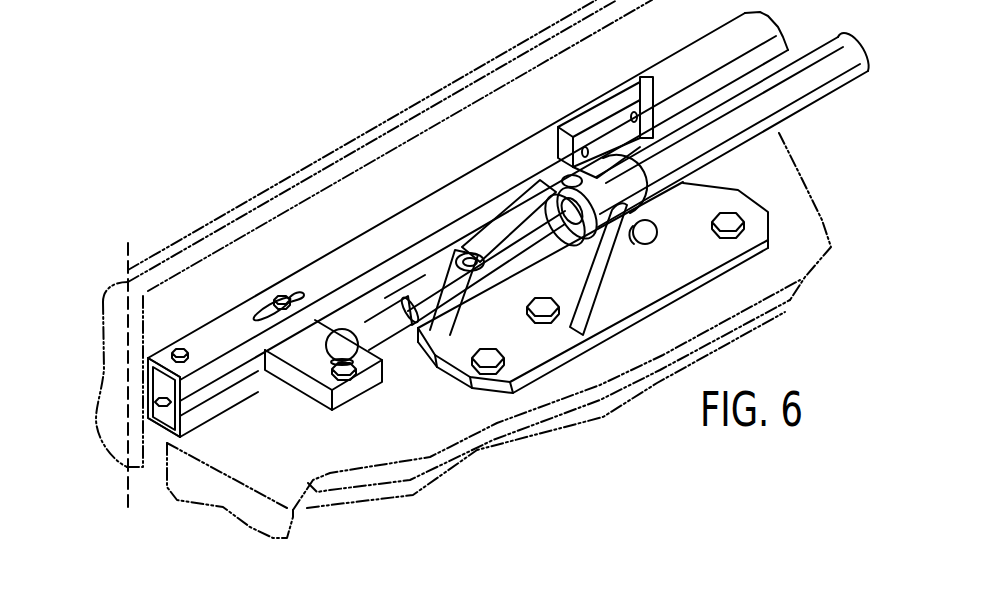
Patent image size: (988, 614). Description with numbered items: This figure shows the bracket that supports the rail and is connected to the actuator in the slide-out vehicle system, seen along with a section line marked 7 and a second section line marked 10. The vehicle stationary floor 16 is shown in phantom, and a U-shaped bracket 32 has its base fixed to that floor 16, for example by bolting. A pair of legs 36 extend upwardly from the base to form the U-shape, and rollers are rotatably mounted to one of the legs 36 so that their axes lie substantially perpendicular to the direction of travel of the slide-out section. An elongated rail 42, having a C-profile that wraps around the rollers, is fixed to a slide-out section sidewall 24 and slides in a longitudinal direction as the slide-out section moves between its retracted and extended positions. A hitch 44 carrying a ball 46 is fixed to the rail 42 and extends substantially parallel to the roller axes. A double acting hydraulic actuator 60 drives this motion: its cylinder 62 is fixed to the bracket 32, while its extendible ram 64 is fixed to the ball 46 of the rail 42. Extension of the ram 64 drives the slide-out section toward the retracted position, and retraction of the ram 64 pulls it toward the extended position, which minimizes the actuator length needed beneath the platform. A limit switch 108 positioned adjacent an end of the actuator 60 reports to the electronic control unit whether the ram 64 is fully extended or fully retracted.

The section line 7- 7 is at (425, 180).
The section line 10-10 / seat assembly 10 is at (67, 290).
The vehicle stationary floor 16 is at (403, 457).
The sidewall 24 is at (298, 256).
The U-shaped bracket 32 is at (500, 392).
The leg 36 is at (498, 212).
The rail 42 is at (188, 383).
The hitch 44 is at (305, 390).
The ball 46 is at (325, 358).
The hydraulic actuator 60 is at (742, 167).
The cylinder 62 is at (768, 132).
The ram 64 is at (428, 292).
The limit switch 108 is at (602, 117).